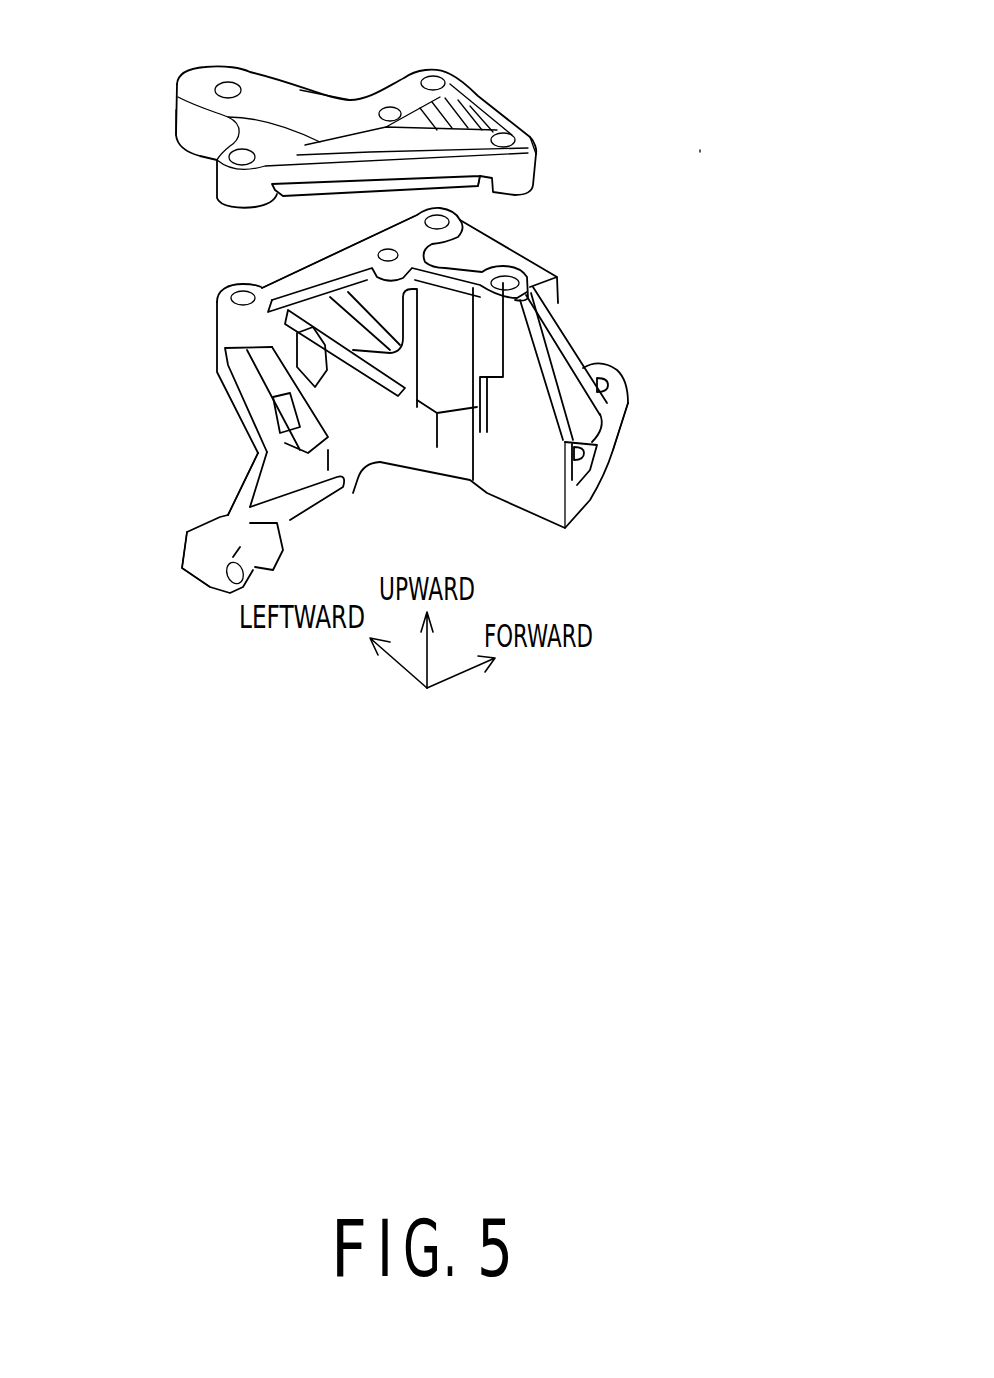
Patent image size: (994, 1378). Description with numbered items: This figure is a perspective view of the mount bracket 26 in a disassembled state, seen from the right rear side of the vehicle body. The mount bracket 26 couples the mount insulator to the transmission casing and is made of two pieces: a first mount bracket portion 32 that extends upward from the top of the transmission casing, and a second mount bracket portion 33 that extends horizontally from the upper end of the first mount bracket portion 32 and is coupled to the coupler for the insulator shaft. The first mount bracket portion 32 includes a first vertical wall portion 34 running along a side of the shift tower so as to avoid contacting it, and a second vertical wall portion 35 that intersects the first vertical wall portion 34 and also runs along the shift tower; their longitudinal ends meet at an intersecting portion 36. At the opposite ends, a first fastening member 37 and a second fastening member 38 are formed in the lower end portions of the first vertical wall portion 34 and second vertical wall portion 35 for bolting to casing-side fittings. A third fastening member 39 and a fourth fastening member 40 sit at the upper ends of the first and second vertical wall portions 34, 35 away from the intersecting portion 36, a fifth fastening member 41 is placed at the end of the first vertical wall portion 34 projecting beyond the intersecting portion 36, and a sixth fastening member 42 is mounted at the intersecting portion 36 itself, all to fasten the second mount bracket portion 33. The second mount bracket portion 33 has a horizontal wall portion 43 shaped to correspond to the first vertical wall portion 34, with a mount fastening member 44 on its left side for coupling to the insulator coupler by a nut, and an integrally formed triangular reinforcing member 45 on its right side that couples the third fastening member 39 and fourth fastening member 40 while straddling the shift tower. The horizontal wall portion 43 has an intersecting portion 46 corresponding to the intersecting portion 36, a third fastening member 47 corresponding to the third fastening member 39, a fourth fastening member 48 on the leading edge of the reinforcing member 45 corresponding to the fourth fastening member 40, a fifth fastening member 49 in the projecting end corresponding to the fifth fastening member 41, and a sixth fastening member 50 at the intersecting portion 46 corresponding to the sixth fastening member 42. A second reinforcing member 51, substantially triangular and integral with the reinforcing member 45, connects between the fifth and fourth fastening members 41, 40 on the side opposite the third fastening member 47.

The mount bracket 26 is at (722, 142).
The first mount bracket portion 32 is at (651, 390).
The second mount bracket portion 33 is at (553, 115).
The first vertical wall portion 34 is at (257, 448).
The second vertical wall portion 35 is at (442, 360).
The intersecting portion 36 is at (360, 245).
The first fastening member 37 is at (182, 568).
The second fastening member 38 is at (603, 472).
The third fastening member 39 is at (233, 318).
The fourth fastening member 40 is at (560, 272).
The fifth fastening member 41 is at (457, 215).
The sixth fastening member 42 is at (320, 252).
The horizontal wall portion 43 is at (236, 118).
The mount fastening member 44 is at (192, 90).
The reinforcing member 45 is at (417, 143).
The intersecting portion 46 is at (377, 115).
The third fastening member 47 is at (223, 160).
The fourth fastening member 48 is at (537, 133).
The fifth fastening member 49 is at (443, 72).
The sixth fastening member 50 is at (393, 103).
The second reinforcing member 51 is at (473, 100).